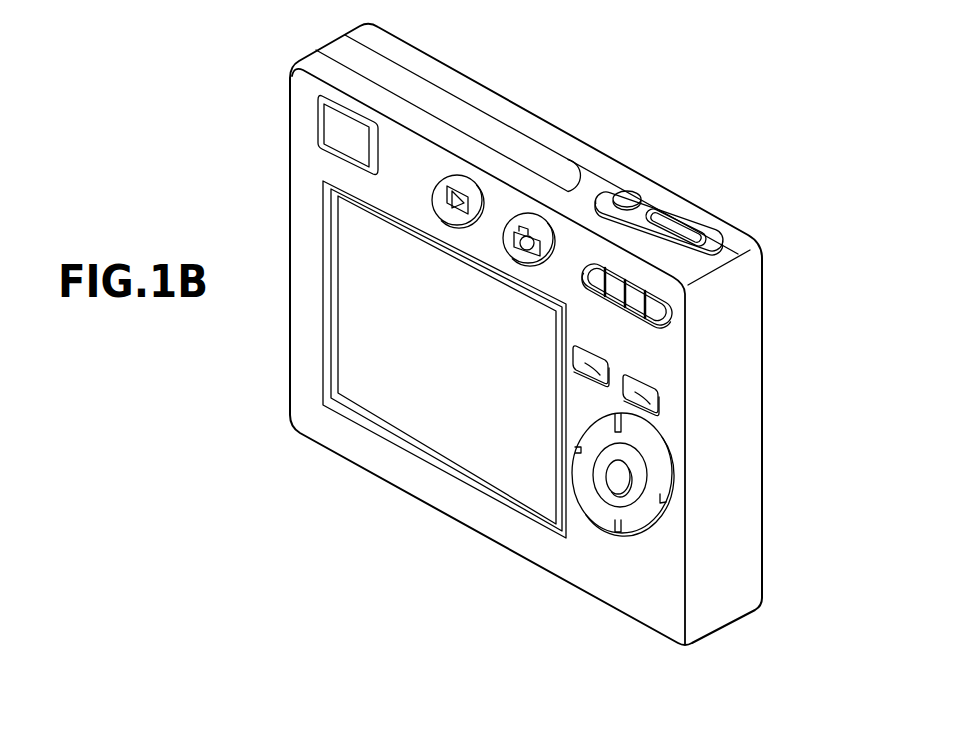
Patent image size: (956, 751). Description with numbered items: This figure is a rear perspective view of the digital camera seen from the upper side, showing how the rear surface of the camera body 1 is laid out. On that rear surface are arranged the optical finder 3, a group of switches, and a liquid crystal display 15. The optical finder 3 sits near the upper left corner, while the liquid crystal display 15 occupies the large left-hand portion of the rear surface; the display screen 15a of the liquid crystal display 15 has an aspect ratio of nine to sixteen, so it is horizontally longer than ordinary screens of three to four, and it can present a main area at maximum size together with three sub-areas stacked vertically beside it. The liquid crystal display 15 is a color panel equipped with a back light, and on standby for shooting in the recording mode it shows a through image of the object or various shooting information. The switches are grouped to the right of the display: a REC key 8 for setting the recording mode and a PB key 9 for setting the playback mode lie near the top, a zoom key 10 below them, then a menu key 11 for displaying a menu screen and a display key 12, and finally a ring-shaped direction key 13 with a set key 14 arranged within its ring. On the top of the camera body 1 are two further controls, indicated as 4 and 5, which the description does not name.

The camera body 1 is at (425, 55).
The optical finder 3 is at (345, 133).
The power button 4 is at (625, 195).
The shutter release button 5 is at (674, 221).
The REC key 8 is at (533, 226).
The PB key 9 is at (458, 180).
The zoom key 10 is at (657, 312).
The menu key 11 is at (612, 373).
The display key 12 is at (663, 407).
The direction key 13 is at (672, 474).
The set key 14 is at (620, 480).
The liquid crystal display 15 is at (437, 402).
The display screen 15a is at (485, 472).